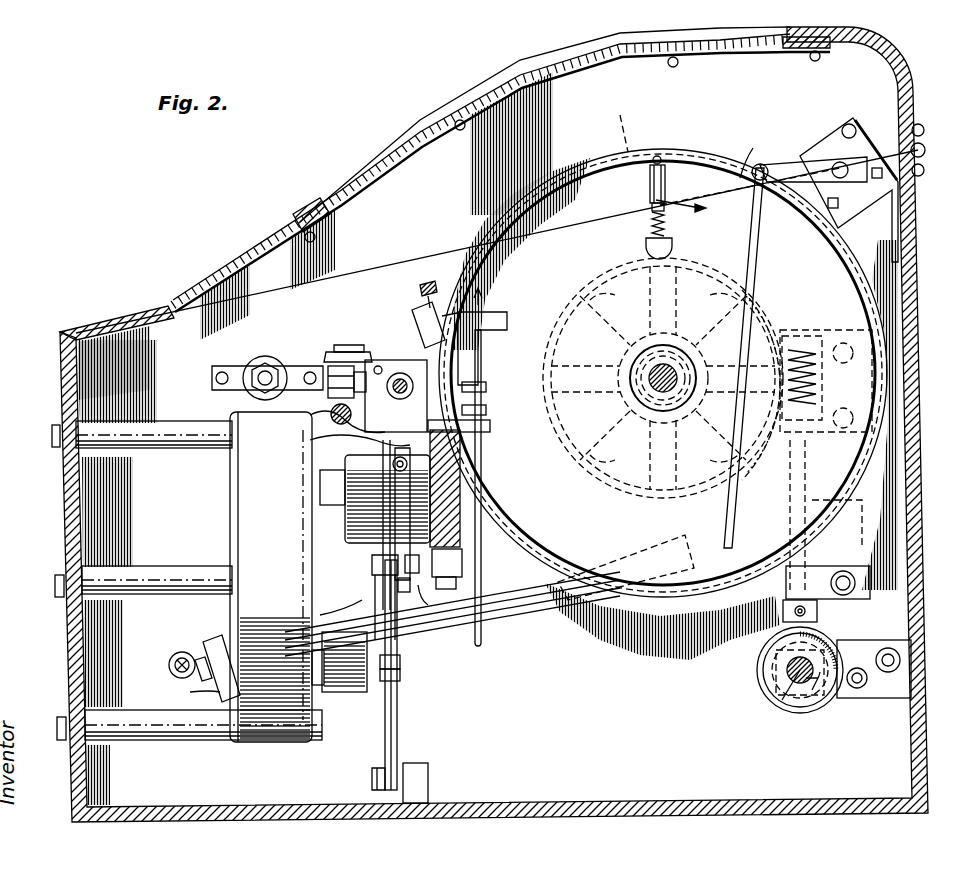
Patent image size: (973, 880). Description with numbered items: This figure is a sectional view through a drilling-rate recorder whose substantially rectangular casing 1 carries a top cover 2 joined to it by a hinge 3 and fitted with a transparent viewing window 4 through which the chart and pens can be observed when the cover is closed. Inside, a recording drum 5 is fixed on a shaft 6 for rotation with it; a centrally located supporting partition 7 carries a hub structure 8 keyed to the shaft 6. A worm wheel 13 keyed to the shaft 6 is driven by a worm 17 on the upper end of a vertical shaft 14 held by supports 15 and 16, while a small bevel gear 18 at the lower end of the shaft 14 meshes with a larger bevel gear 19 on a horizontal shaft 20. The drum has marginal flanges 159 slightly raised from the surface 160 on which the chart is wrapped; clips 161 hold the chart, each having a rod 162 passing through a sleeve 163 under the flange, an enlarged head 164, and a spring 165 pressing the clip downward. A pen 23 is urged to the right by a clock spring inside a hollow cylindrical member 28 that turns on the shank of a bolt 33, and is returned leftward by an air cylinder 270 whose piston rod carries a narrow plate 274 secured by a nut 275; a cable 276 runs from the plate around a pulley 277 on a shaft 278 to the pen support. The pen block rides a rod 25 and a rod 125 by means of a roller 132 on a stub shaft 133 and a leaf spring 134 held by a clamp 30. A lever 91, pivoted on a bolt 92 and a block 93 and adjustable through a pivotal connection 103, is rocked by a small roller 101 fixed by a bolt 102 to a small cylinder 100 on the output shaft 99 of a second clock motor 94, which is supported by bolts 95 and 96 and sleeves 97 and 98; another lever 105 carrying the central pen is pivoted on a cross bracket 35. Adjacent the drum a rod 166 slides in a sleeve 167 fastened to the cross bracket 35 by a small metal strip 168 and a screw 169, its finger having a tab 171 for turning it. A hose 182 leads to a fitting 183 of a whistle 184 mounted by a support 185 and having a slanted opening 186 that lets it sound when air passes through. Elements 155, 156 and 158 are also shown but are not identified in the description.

The casing 1 is at (62, 366).
The top cover 2 is at (275, 250).
The hinge 3 is at (926, 148).
The transparent viewing window 4 is at (422, 125).
The recording drum 5 is at (550, 172).
The shaft 6 is at (645, 355).
The supporting partition 7 is at (747, 152).
The hub structure 8 is at (680, 355).
The worm wheel 13 is at (762, 318).
The vertical shaft 14 is at (862, 495).
The support 15 is at (905, 380).
The support 16 is at (862, 565).
The worm 17 is at (800, 340).
The small bevel gear 18 is at (820, 612).
The larger bevel gear 19 is at (762, 682).
The horizontal shaft 20 is at (778, 705).
The pen 23 is at (455, 295).
The rod 25 is at (399, 400).
The cylindrical member 28 is at (345, 520).
The clamp 30 is at (383, 470).
The bolt 33 is at (340, 465).
The cross bracket 35 is at (460, 542).
The lever 91 is at (385, 555).
The bolt 92 is at (372, 776).
The block 93 is at (428, 775).
The second clock motor 94 is at (246, 487).
The bolt 95 is at (55, 582).
The bolt 96 is at (50, 435).
The sleeve 97 is at (143, 566).
The sleeve 98 is at (170, 420).
The output shaft 99 is at (365, 692).
The small cylinder 100 is at (372, 710).
The small roller 101 is at (402, 678).
The bolt 102 is at (402, 660).
The pivotal connection 103 is at (372, 578).
The lever 105 is at (420, 585).
The rod 125 is at (333, 420).
The roller 132 is at (338, 402).
The stub shaft 133 is at (330, 396).
The leaf spring 134 is at (330, 445).
The bracket 155 is at (848, 122).
The arm 156 is at (778, 163).
The lever 158 is at (748, 236).
The marginal flanges 159 is at (578, 168).
The surface 160 is at (619, 122).
The clip 161 is at (657, 152).
The rod 162 is at (650, 200).
The sleeve 163 is at (690, 168).
The enlarged head 164 is at (646, 243).
The spring 165 is at (652, 224).
The rod 166 is at (483, 495).
The sleeve 167 is at (488, 388).
The small metal strip 168 is at (490, 432).
The screw 169 is at (487, 410).
The tab 171 is at (500, 310).
The hose 182 is at (180, 652).
The fitting 183 is at (200, 650).
The whistle 184 is at (545, 596).
The support 185 is at (190, 692).
The slanted opening 186 is at (340, 600).
The air cylinder 270 is at (252, 366).
The narrow plate 274 is at (218, 372).
The nut 275 is at (266, 363).
The cable 276 is at (325, 368).
The pulley 277 is at (335, 350).
The shaft 278 is at (349, 345).